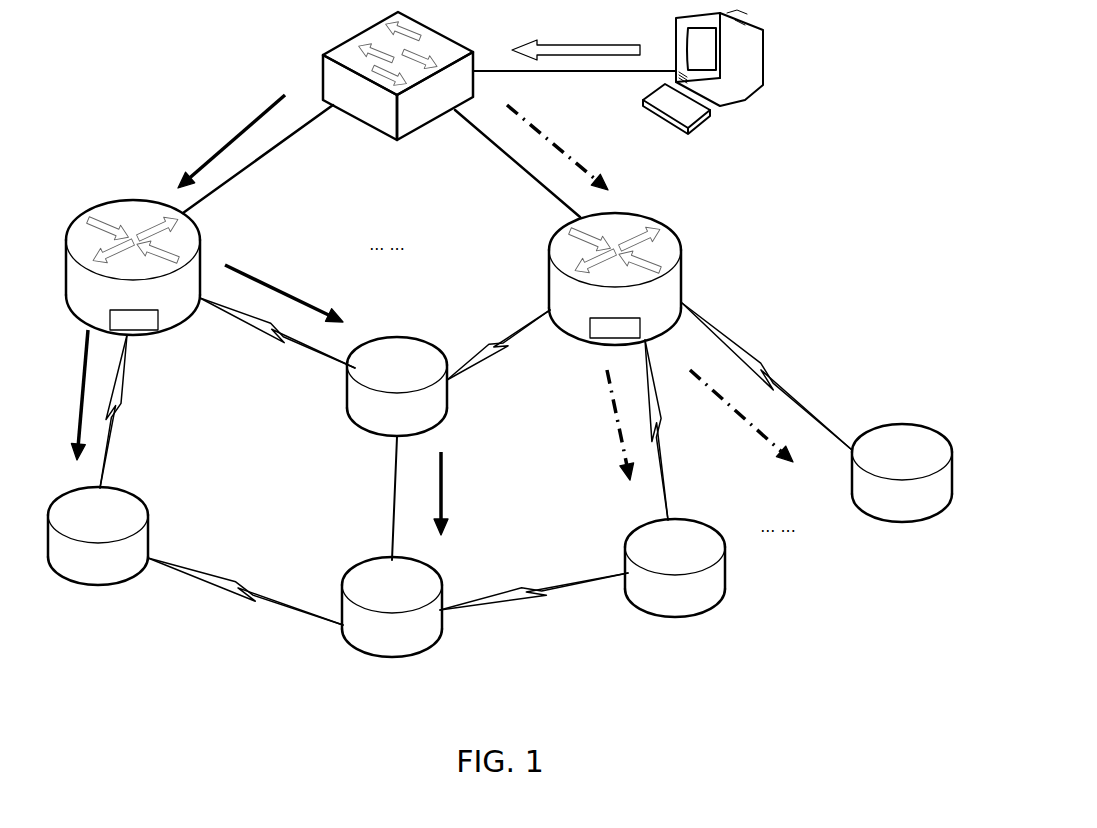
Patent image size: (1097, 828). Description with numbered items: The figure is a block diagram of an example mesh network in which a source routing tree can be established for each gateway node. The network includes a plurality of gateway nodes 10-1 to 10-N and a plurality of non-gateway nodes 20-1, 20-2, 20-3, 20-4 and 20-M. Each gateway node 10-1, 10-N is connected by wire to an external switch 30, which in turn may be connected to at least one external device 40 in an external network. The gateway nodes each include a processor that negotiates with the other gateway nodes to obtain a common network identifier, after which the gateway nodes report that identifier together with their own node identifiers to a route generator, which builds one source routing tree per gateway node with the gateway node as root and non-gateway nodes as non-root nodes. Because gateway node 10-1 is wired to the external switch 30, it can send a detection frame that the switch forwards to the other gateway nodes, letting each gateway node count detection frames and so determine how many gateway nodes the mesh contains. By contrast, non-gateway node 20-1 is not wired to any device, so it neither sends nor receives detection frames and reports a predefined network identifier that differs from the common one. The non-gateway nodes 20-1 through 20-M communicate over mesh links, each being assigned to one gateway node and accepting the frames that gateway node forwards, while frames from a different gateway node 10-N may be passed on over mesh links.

The gateway node 10-1 is at (115, 305).
The gateway node 10-N is at (596, 310).
The non-gateway node 20-1 is at (379, 425).
The non-gateway node 20-2 is at (80, 575).
The non-gateway node 20-3 is at (374, 646).
The non-gateway node 20-4 is at (657, 606).
The non-gateway node 20-M is at (882, 511).
The external switch 30 is at (413, 113).
The external device 40 is at (727, 79).